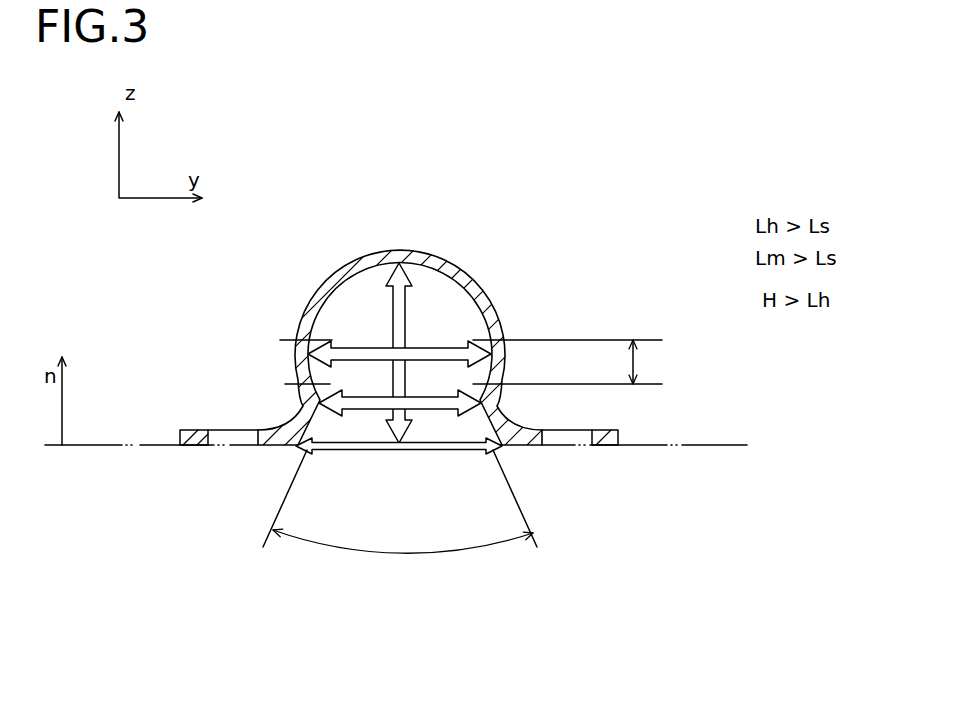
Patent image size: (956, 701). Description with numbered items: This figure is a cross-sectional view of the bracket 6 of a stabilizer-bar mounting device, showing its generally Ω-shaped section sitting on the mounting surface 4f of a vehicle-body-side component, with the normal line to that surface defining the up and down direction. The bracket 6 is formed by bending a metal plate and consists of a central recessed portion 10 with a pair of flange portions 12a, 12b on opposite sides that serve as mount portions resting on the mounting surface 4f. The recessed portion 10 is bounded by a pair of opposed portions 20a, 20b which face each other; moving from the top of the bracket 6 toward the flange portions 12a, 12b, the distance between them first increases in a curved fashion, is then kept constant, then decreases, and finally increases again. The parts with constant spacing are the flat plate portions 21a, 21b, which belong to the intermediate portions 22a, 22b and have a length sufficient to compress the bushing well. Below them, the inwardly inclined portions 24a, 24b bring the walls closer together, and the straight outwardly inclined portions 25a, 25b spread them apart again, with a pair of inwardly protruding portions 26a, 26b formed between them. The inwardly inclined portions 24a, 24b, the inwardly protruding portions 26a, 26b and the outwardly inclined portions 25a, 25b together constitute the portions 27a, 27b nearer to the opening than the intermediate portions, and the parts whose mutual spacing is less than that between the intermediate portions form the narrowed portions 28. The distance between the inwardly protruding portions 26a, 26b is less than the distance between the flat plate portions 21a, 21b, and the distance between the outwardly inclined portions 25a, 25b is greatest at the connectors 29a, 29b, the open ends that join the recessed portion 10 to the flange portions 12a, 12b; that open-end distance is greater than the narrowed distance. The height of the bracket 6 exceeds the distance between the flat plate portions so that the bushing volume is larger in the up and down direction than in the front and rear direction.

The mounting surface 4f is at (730, 443).
The bracket 6 is at (476, 220).
The recessed portion 10 is at (379, 233).
The flange portion 12a is at (187, 446).
The flange portion 12b is at (608, 446).
The opposed portion 20a is at (297, 268).
The opposed portion 20b is at (488, 267).
The flat plate portion 21a is at (295, 367).
The flat plate portion 21b is at (506, 357).
The intermediate portion 22a is at (263, 338).
The intermediate portion 22b is at (522, 355).
The inwardly inclined portion 24a is at (305, 398).
The inwardly inclined portion 24b is at (490, 397).
The outwardly inclined portion 25a is at (259, 432).
The outwardly inclined portion 25b is at (542, 432).
The inwardly protruding portion 26a is at (317, 404).
The inwardly protruding portion 26b is at (483, 404).
The portion nearer to the opening than the intermediate portion 27a is at (275, 408).
The portion nearer to the opening than the intermediate portion 27b is at (558, 415).
The narrowed portions 28 is at (452, 393).
The connector 29a is at (303, 541).
The connector 29b is at (494, 541).